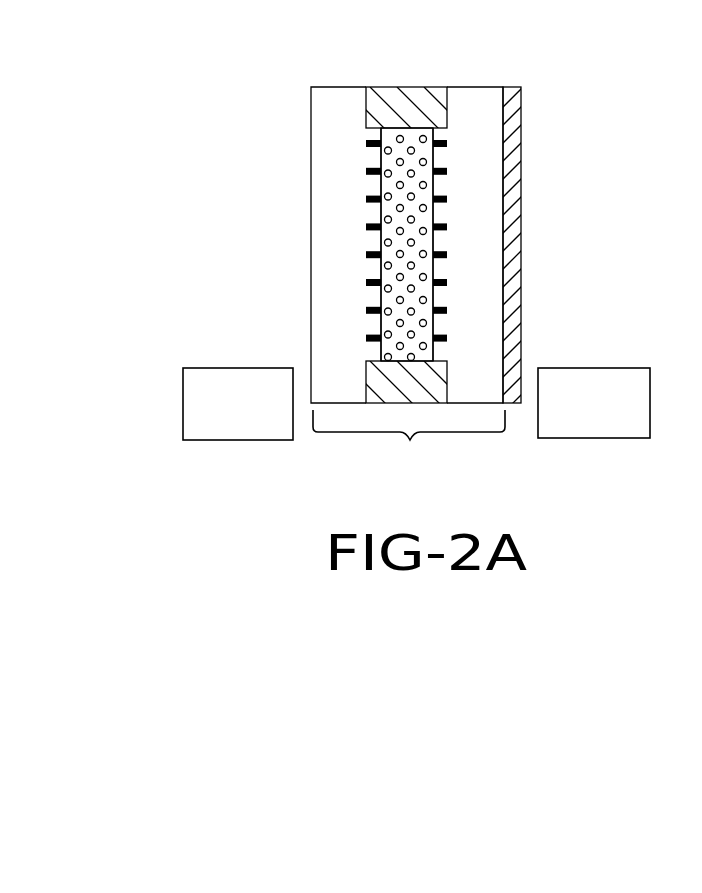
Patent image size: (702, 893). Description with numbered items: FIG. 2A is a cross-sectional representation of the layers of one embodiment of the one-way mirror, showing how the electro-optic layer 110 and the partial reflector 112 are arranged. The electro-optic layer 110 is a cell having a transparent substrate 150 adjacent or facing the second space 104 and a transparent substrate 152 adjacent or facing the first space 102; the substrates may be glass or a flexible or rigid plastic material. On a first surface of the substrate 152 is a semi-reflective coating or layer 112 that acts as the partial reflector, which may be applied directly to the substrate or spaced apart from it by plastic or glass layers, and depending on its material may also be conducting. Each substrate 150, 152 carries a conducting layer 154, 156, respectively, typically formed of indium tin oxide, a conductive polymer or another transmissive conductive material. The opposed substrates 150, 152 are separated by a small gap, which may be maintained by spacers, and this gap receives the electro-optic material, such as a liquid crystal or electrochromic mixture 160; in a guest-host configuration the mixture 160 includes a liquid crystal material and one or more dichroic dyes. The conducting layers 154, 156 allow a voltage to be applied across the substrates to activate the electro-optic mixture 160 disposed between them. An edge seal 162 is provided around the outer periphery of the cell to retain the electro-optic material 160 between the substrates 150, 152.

The first space 102 is at (593, 368).
The second space 104 is at (244, 368).
The electro-optic layer 110 is at (405, 443).
The partial reflector 112 is at (524, 139).
The transparent substrate 150 is at (340, 108).
The transparent substrate 152 is at (473, 106).
The conducting layer 154 is at (375, 188).
The conducting layer 156 is at (440, 213).
The electro-optic mixture 160 is at (410, 278).
The edge seal 162 is at (418, 108).